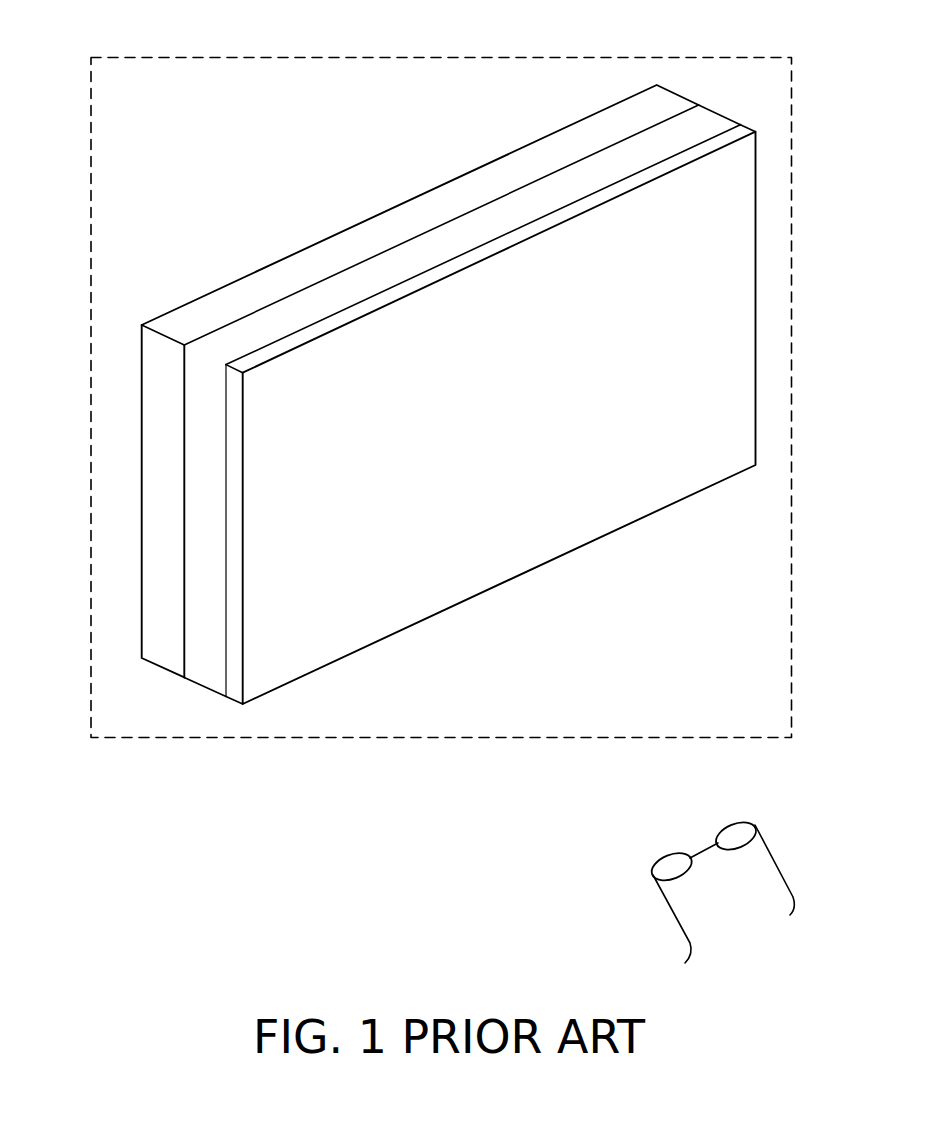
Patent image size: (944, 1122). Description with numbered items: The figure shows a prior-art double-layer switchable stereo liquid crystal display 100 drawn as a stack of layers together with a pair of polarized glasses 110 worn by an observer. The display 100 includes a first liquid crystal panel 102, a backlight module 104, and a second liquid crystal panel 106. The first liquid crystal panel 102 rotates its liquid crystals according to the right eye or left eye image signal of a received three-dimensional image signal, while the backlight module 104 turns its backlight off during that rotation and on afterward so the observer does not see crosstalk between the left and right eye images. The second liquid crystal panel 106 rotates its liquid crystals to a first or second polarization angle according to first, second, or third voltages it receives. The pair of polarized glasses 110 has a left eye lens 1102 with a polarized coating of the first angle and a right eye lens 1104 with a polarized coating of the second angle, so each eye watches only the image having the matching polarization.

The double-layer switchable stereo liquid crystal display 100 is at (792, 98).
The first liquid crystal panel 102 is at (198, 535).
The backlight module 104 is at (156, 425).
The second liquid crystal panel 106 is at (743, 134).
The pair of polarized glasses 110 is at (720, 883).
The left eye lens 1102 is at (661, 866).
The right eye lens 1104 is at (746, 823).